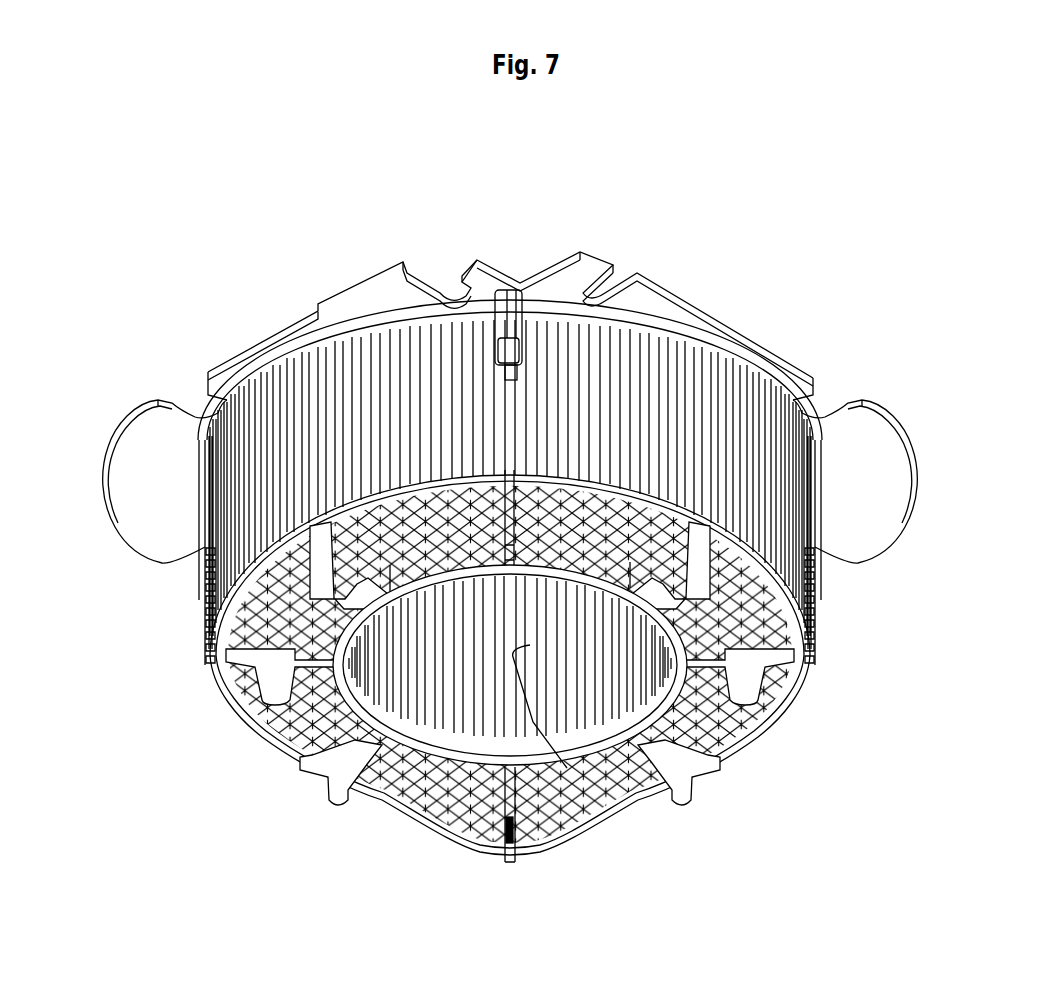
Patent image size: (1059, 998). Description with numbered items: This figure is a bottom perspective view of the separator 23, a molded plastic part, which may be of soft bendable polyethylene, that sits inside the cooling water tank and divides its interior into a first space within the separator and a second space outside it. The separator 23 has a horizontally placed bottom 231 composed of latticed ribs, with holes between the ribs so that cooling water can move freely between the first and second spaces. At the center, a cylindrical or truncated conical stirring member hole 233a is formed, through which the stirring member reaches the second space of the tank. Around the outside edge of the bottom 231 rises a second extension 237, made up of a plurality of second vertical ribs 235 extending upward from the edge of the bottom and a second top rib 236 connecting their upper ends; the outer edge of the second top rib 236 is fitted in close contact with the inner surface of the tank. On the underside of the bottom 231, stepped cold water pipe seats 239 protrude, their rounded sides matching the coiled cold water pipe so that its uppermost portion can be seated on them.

The separator 23 is at (627, 202).
The bottom 231 is at (780, 572).
The stirring member hole 233a is at (597, 800).
The second vertical ribs 235 is at (600, 393).
The second top rib 236 is at (675, 312).
The second extension 237 is at (871, 264).
The cold water pipe seat 239 is at (770, 648).